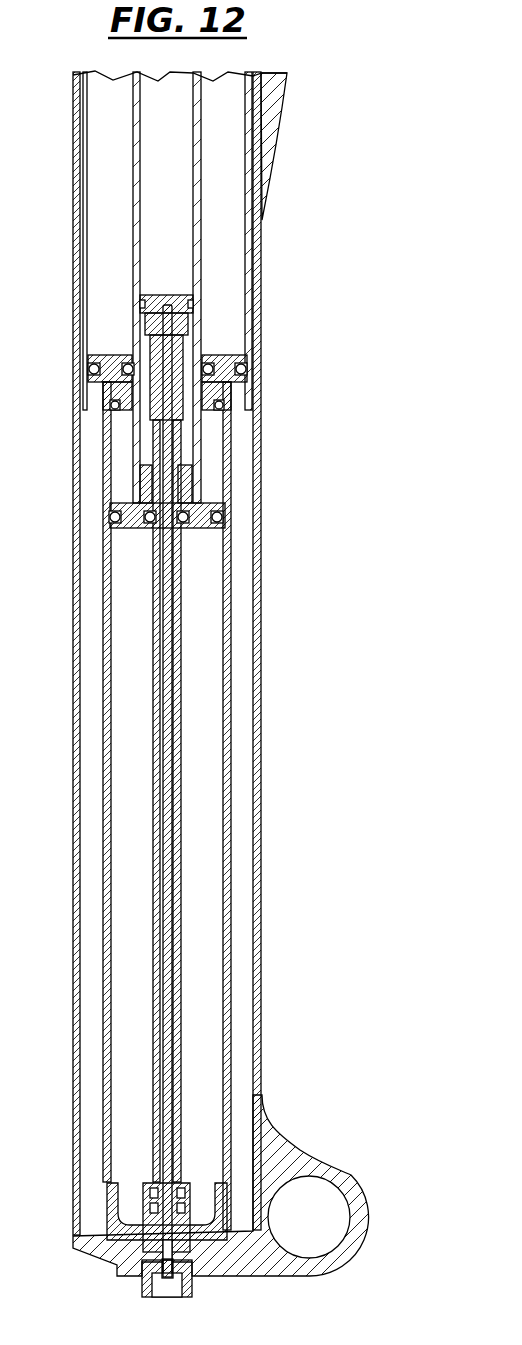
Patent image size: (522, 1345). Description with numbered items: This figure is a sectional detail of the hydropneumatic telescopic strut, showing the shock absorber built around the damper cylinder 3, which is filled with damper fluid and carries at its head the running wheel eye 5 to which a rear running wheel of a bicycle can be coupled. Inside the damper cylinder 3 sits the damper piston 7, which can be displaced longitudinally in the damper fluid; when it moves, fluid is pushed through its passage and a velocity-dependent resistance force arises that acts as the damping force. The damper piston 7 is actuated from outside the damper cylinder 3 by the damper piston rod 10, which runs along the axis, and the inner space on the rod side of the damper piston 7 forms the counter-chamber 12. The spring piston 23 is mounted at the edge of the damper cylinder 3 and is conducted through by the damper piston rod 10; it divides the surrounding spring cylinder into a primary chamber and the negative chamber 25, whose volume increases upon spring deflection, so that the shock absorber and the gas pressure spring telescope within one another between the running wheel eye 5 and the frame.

The damper cylinder 3 is at (131, 158).
The damper piston 7 is at (150, 293).
The counter-chamber 12 is at (183, 362).
The damper piston rod 10 is at (181, 912).
The spring piston 23 is at (108, 355).
The negative chamber 25 is at (211, 471).
The running wheel eye 5 is at (350, 1182).